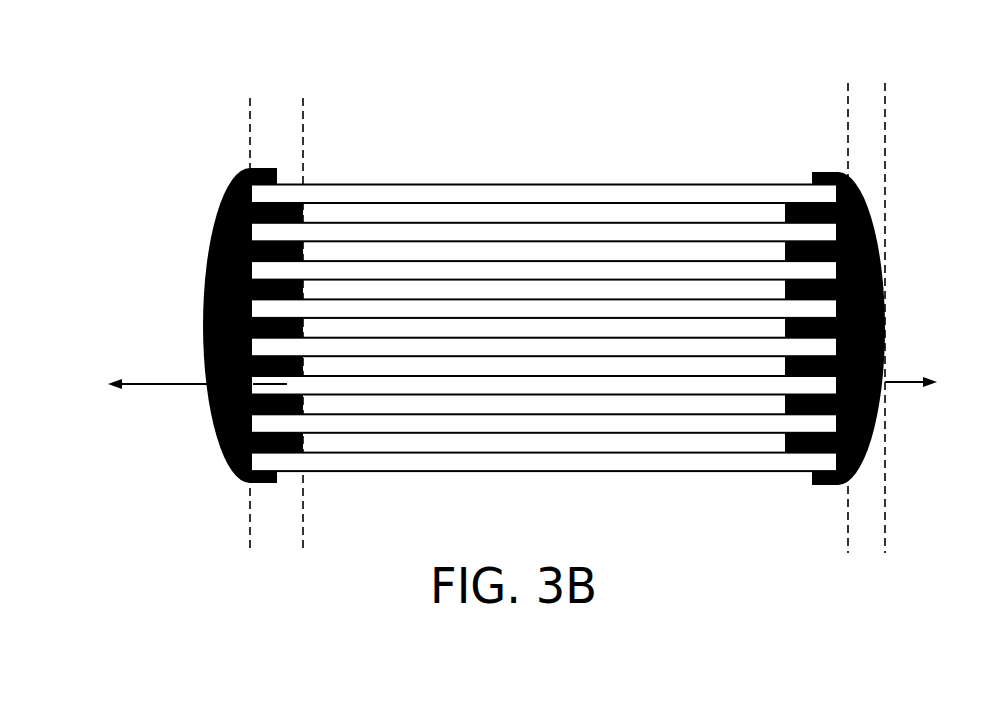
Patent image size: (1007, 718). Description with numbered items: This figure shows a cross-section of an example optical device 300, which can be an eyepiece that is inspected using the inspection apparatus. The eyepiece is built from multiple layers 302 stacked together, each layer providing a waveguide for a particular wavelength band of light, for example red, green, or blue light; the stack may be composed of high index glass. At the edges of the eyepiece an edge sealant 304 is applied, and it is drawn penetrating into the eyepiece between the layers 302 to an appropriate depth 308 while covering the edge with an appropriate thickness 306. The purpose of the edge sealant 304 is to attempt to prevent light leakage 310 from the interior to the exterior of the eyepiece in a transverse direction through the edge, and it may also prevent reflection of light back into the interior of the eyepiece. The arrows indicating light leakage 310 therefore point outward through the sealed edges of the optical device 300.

The optical device 300 is at (160, 80).
The layers 302 is at (457, 188).
The edge sealant 304 is at (219, 223).
The thickness 306 is at (883, 107).
The depth 308 is at (301, 105).
The light leakage 310 is at (155, 386).